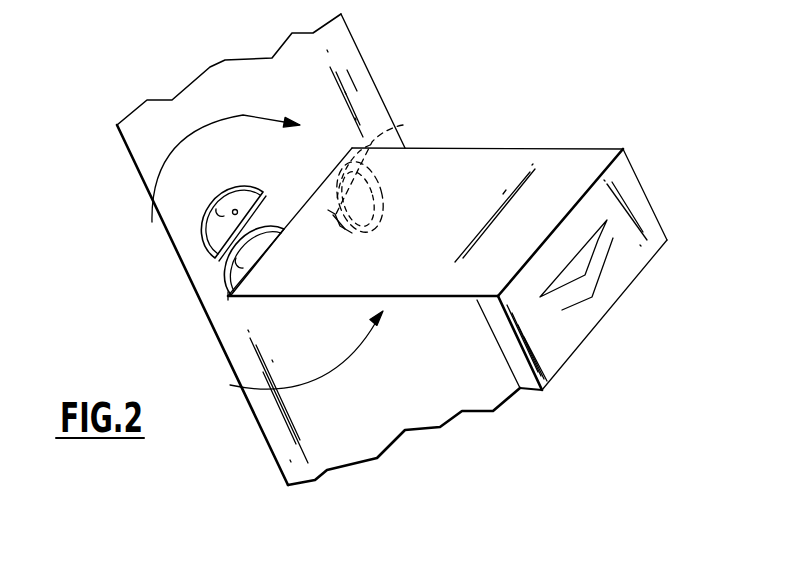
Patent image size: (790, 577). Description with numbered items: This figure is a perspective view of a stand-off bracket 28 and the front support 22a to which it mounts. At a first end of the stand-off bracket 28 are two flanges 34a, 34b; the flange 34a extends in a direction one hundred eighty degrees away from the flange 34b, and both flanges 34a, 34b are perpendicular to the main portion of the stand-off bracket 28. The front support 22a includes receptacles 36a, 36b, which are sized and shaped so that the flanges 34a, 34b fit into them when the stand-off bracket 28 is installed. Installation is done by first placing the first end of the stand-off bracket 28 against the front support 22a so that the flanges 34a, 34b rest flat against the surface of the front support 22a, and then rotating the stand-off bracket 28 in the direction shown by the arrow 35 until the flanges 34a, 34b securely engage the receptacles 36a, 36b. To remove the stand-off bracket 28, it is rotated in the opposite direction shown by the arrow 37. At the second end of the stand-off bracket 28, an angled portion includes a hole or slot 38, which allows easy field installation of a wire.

The front support 22a is at (483, 387).
The stand-off bracket 28 is at (597, 153).
The flange 34a is at (404, 125).
The flange 34b is at (227, 283).
The arrow 35 is at (243, 115).
The receptacle 36a is at (382, 214).
The receptacle 36b is at (213, 223).
The arrow 37 is at (353, 352).
The hole or slot 38 is at (600, 235).